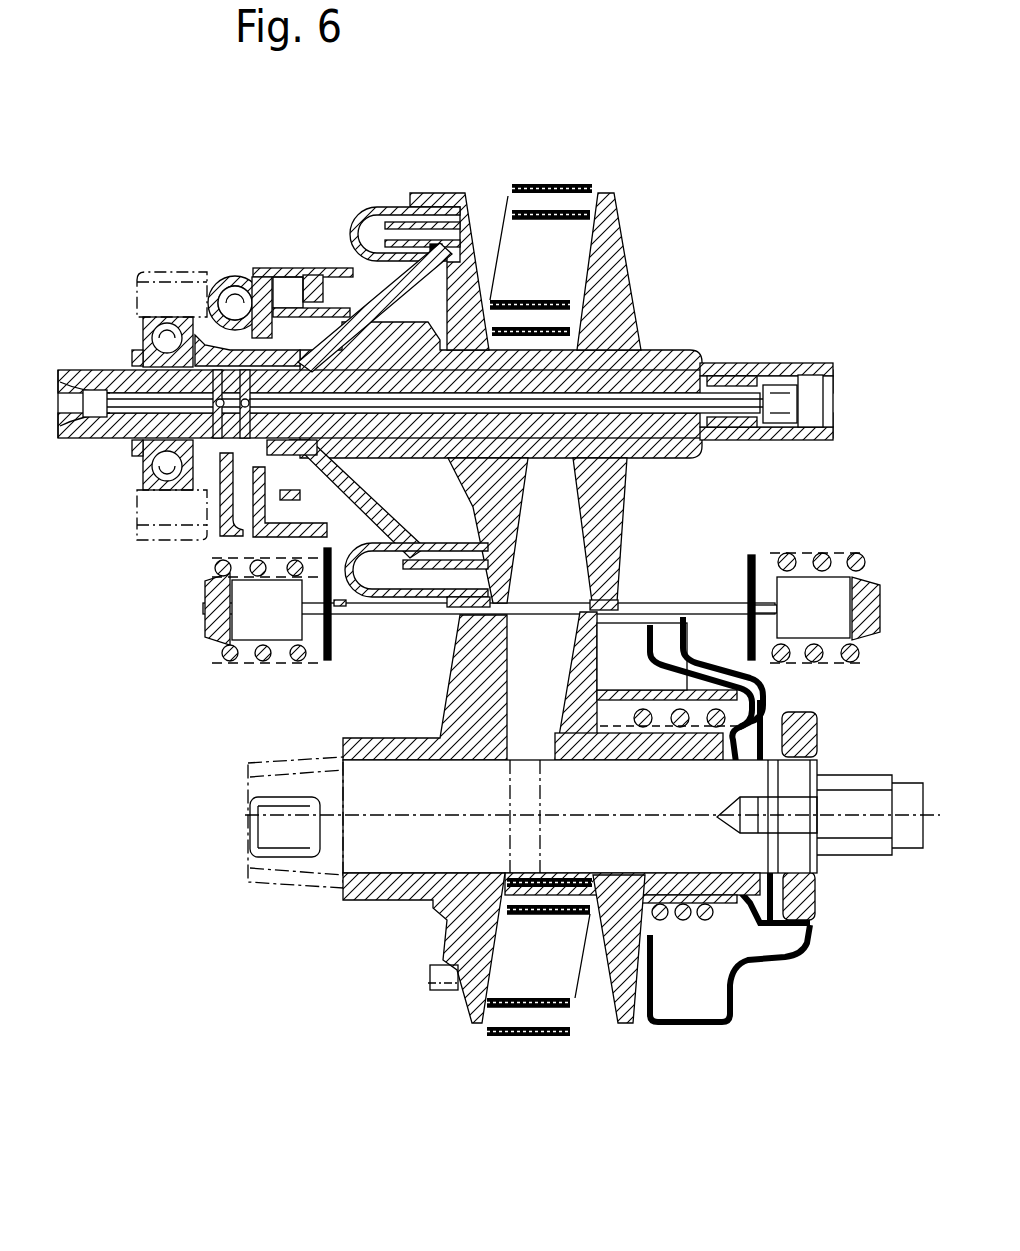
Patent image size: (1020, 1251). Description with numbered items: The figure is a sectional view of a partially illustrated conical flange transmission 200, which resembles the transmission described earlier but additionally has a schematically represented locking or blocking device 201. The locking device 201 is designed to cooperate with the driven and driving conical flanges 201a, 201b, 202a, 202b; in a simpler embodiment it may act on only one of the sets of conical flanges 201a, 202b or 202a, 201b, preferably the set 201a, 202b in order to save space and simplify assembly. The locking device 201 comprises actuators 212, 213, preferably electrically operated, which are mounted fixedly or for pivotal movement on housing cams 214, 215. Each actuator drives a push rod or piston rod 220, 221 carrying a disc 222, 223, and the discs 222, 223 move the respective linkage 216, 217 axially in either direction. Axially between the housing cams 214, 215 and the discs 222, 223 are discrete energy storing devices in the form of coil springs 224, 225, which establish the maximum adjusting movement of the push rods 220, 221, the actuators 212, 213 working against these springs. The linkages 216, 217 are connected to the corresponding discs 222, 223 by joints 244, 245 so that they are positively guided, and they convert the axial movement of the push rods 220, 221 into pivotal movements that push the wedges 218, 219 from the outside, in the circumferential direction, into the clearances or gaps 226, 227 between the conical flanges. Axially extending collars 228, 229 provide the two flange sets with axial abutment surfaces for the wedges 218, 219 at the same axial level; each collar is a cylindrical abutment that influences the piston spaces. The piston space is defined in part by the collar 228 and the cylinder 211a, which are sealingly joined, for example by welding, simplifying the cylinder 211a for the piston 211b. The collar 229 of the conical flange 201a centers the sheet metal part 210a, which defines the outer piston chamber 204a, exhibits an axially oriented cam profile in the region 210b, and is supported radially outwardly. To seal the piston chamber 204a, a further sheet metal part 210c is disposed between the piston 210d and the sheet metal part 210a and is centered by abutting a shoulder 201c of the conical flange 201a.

The conical flange transmission 200 is at (431, 142).
The locking device 201 is at (677, 557).
The conical flange 201a is at (462, 192).
The conical flange 201b is at (613, 257).
The shoulder 201c is at (443, 247).
The sheet metal part 210a is at (357, 229).
The region with cam profile 210b is at (424, 207).
The sheet metal part 210c is at (503, 177).
The piston 210d is at (355, 293).
The conical flange 202a is at (620, 1010).
The conical flange 202b is at (472, 1023).
The outer piston chamber 204a is at (391, 578).
The cylinder 211a is at (752, 967).
The piston 211b is at (752, 936).
The actuator 212 is at (829, 593).
The actuator 213 is at (228, 661).
The housing cam 214 is at (878, 617).
The housing cam 215 is at (203, 612).
The linkage 216 is at (692, 594).
The linkage 217 is at (374, 628).
The wedge 218 is at (573, 612).
The wedge 219 is at (455, 618).
The push rod 220 is at (785, 620).
The push rod 221 is at (318, 614).
The disc 222 is at (749, 560).
The disc 223 is at (327, 548).
The coil spring 224 is at (824, 556).
The coil spring 225 is at (266, 662).
The gap 226 is at (613, 607).
The gap 227 is at (473, 620).
The collar 228 is at (595, 602).
The collar 229 is at (488, 593).
The joint 244 is at (745, 614).
The joint 245 is at (338, 614).